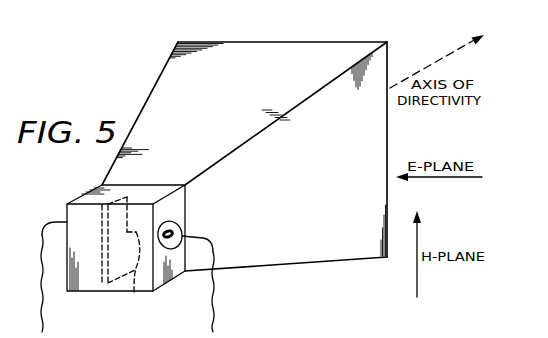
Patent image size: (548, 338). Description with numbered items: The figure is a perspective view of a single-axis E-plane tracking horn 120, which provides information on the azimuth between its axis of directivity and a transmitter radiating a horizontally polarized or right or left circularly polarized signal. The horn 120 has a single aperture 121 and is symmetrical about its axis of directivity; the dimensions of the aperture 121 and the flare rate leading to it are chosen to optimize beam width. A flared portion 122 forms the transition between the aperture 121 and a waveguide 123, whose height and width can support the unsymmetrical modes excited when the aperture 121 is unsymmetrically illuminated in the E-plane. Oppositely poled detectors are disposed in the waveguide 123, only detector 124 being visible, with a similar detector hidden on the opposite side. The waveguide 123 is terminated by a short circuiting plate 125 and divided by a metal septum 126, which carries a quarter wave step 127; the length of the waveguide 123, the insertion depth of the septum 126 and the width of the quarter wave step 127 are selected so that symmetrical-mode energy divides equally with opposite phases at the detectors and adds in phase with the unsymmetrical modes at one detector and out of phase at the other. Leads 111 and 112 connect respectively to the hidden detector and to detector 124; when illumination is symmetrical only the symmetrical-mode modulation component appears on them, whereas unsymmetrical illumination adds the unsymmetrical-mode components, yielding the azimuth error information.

The lead 111 is at (40, 277).
The lead 112 is at (214, 309).
The single-axis E-plane tracking horn 120 is at (196, 327).
The aperture 121 is at (389, 56).
The flared portion 122 is at (296, 50).
The waveguide 123 is at (90, 194).
The detector 124 is at (180, 223).
The short circuiting plate 125 is at (89, 284).
The metal septum 126 is at (101, 227).
The quarter wave step 127 is at (134, 292).